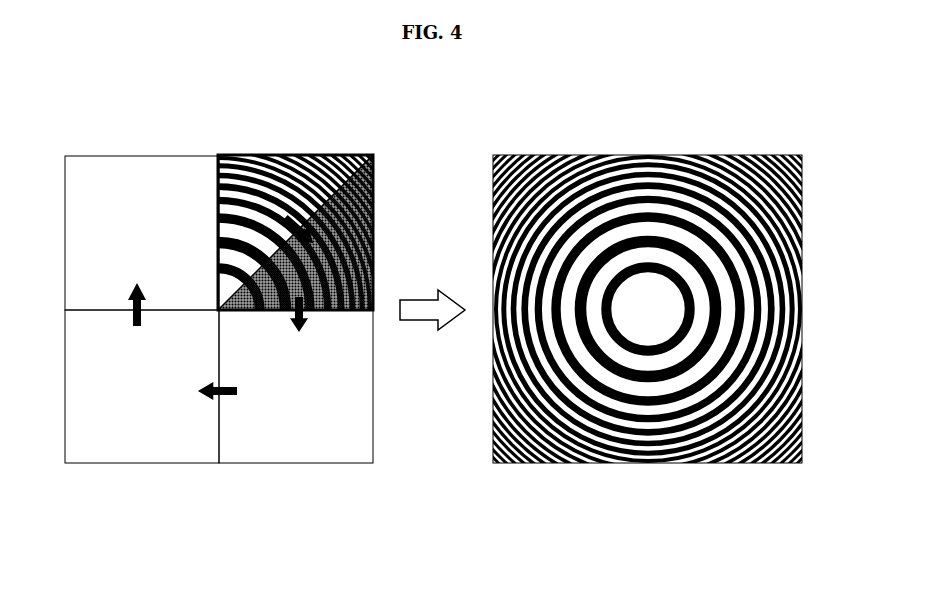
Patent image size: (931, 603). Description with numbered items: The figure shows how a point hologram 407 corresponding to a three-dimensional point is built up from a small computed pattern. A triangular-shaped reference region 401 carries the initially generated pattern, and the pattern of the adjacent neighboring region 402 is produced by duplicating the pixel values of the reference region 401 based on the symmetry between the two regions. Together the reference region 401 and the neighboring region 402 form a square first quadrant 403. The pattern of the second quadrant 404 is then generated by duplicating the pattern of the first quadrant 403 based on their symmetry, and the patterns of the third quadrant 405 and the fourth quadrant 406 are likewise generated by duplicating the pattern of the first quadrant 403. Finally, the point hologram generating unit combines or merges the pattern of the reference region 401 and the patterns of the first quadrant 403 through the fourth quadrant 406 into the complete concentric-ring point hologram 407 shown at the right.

The reference region 401 is at (224, 310).
The neighboring region 402 is at (376, 213).
The first quadrant 403 is at (374, 156).
The second quadrant 404 is at (303, 452).
The third quadrant 405 is at (143, 452).
The fourth quadrant 406 is at (139, 167).
The point hologram 407 is at (645, 156).